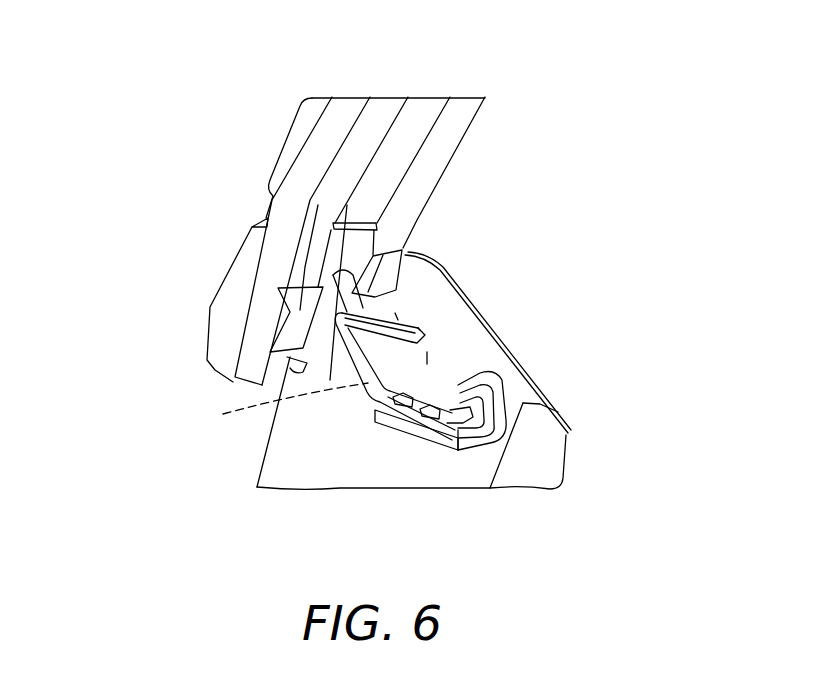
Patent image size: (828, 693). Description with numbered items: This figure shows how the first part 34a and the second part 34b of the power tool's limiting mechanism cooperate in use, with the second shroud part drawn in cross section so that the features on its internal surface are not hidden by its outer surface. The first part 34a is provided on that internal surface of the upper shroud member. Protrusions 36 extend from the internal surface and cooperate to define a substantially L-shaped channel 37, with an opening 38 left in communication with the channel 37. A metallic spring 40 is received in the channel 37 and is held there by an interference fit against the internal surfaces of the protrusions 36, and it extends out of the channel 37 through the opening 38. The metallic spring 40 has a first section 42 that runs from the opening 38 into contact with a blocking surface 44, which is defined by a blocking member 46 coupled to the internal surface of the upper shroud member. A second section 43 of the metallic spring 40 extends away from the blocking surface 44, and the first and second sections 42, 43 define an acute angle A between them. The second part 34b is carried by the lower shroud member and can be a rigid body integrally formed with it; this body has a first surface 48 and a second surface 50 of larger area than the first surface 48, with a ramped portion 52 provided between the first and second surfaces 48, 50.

The first part of the limiting mechanism 34a is at (400, 477).
The second part of the limiting mechanism 34b is at (432, 267).
The protrusions 36 is at (483, 420).
The channel 37 is at (459, 420).
The opening 38 is at (340, 412).
The metallic spring 40 is at (453, 359).
The first section 42 is at (335, 345).
The second section 43 is at (420, 330).
The blocking surface 44 is at (350, 292).
The blocking member 46 is at (327, 302).
The first surface 48 is at (403, 250).
The second surface 50 is at (395, 313).
The ramped portion 52 is at (378, 268).
The acute angle A is at (284, 409).